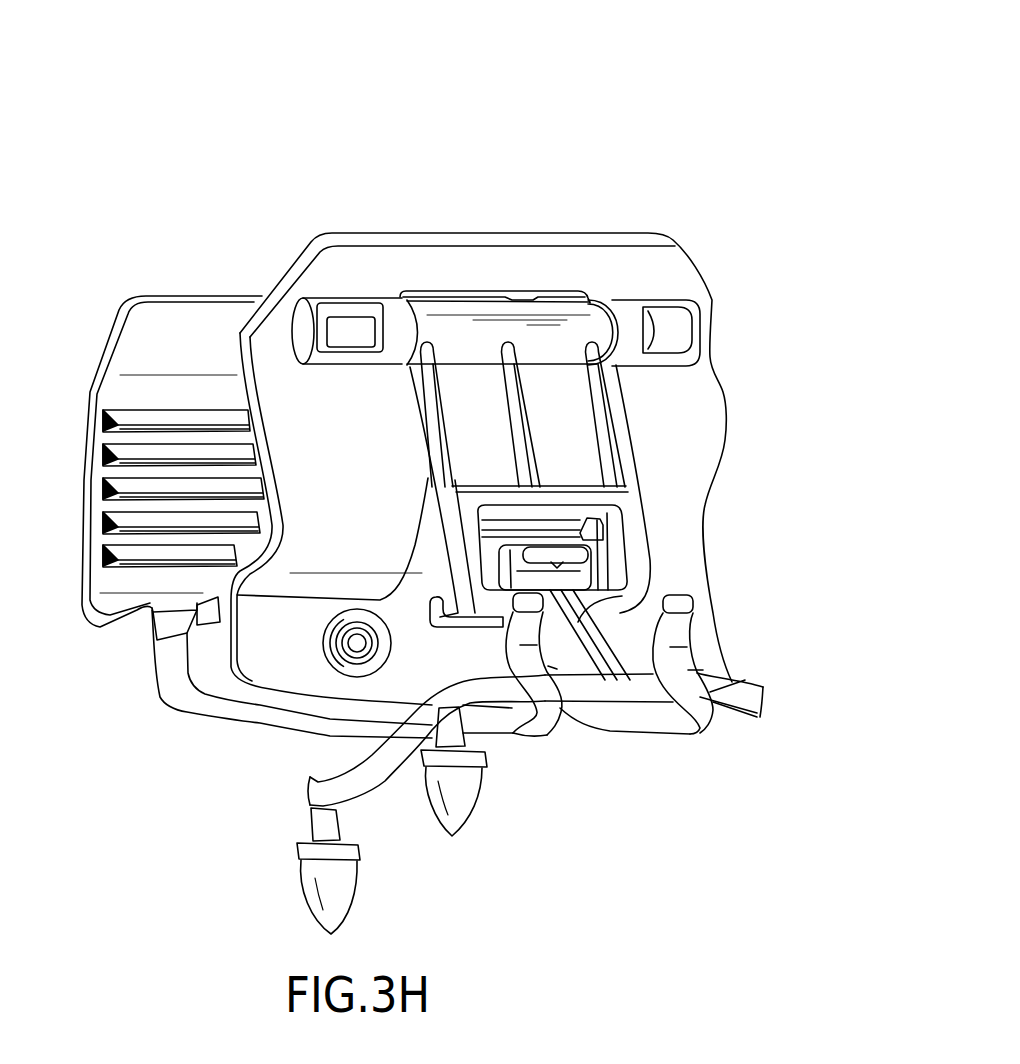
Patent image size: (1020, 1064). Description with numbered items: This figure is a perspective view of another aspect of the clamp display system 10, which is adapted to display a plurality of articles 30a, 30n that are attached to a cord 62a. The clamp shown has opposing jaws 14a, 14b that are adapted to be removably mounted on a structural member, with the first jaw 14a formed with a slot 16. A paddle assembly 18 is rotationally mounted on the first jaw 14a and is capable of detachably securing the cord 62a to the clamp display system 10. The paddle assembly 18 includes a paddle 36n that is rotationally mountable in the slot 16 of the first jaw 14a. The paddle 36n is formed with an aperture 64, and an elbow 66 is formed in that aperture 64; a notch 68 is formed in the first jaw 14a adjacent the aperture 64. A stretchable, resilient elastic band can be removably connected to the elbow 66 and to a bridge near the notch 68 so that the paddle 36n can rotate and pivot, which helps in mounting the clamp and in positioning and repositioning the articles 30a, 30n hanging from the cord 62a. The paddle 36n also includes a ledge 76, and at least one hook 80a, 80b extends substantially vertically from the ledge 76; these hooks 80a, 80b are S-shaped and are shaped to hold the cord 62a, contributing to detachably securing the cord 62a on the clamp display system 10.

The clamp display system 10 is at (709, 108).
The first jaw 14a is at (364, 250).
The second jaw 14b is at (172, 305).
The slot 16 is at (529, 297).
The paddle assembly 18 is at (370, 439).
The paddle 36n is at (607, 417).
The aperture 64 is at (603, 523).
The elbow 66 is at (580, 570).
The notch 68 is at (407, 600).
The ledge 76 is at (530, 683).
The hook 80a is at (737, 693).
The hook 80b is at (542, 712).
The cord 62a is at (323, 780).
The article 30a is at (473, 830).
The article 30n is at (360, 873).